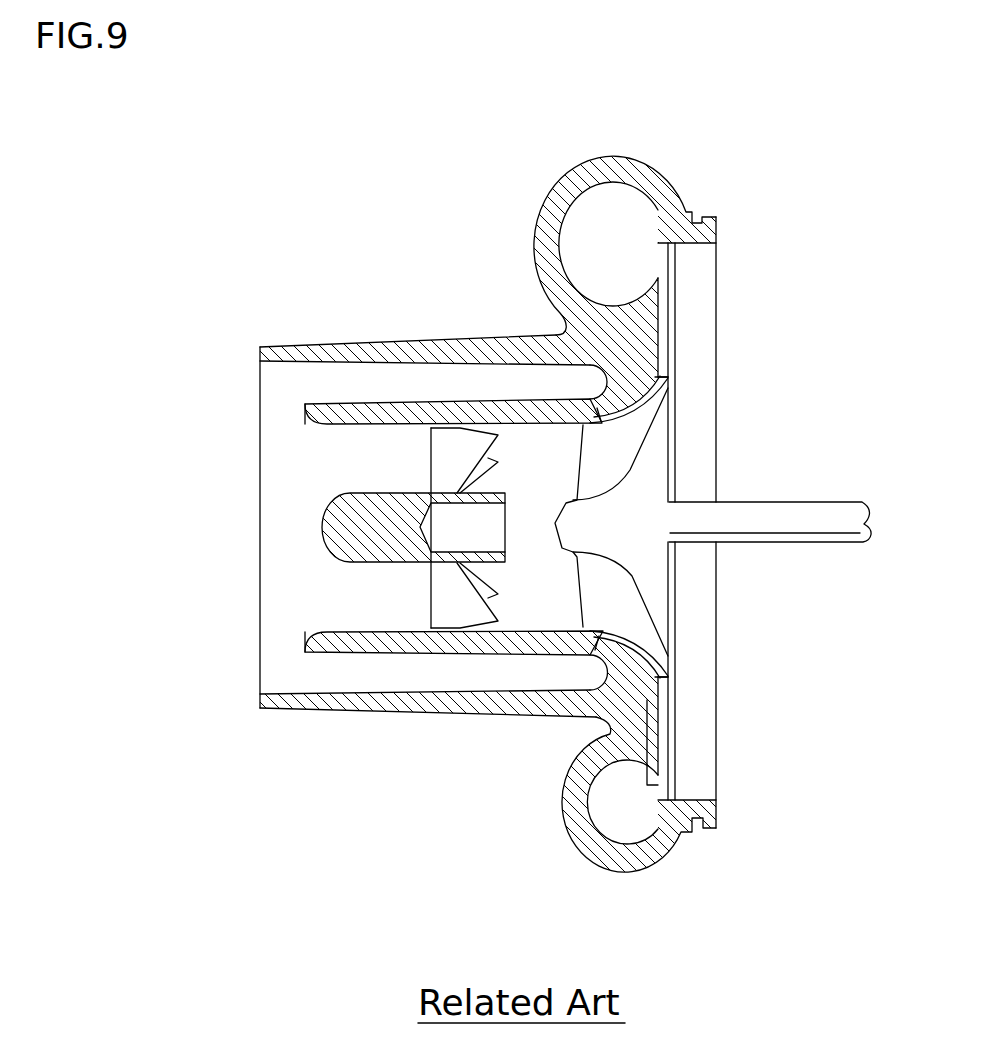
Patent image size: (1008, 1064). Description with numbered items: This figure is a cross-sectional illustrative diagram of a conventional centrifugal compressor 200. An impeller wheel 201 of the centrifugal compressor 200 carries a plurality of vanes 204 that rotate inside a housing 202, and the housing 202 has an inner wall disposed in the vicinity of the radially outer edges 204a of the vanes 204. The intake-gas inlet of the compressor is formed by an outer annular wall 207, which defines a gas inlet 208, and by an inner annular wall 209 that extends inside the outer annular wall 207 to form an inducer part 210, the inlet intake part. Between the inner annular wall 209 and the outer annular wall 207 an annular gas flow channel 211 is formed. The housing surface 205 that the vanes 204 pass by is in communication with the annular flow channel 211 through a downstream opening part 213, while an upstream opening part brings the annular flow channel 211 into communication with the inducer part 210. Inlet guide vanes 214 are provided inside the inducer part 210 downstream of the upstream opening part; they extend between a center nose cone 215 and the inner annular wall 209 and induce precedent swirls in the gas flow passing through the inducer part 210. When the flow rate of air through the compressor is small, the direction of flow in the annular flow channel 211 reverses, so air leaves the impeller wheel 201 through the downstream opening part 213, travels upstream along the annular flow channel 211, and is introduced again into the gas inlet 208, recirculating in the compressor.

The centrifugal compressor 200 is at (687, 128).
The impeller wheel 201 is at (655, 573).
The housing 202 is at (600, 158).
The vanes 204 is at (625, 612).
The radially outer edges 204a is at (643, 403).
The housing surface 205 is at (637, 418).
The outer annular wall 207 is at (396, 338).
The gas inlet 208 is at (283, 418).
The inner annular wall 209 is at (340, 402).
The inducer part 210 is at (360, 608).
The annular gas flow channel 211 is at (506, 388).
The downstream opening part 213 is at (603, 428).
The inlet guide vanes 214 is at (458, 605).
The center nose cone 215 is at (330, 517).